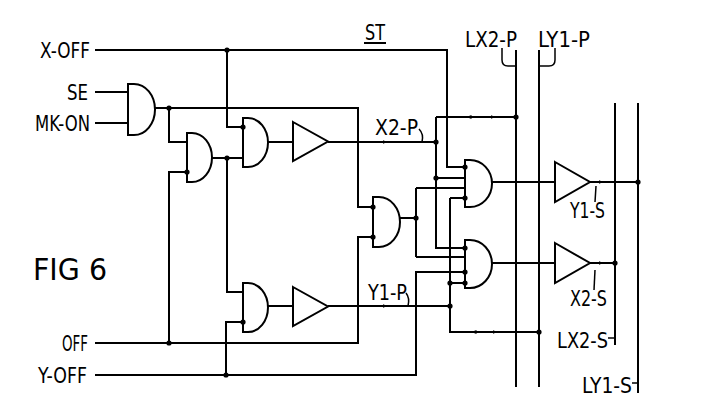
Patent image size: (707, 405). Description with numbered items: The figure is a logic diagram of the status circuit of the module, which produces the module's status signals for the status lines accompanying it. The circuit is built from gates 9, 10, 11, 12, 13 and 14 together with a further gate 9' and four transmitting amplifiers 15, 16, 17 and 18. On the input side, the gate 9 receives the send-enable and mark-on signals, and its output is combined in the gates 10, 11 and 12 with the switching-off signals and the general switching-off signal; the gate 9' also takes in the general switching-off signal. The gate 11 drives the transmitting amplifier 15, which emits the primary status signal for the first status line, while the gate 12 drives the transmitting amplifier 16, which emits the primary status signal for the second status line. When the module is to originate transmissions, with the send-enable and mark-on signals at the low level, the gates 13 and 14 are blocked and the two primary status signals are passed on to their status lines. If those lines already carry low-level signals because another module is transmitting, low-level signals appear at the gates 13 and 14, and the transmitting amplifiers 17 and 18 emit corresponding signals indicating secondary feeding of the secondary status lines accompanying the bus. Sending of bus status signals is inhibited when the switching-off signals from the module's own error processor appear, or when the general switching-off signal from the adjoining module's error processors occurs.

The gate 9 is at (150, 102).
The gate 10 is at (192, 183).
The gate 11 is at (257, 167).
The gate 12 is at (248, 283).
The gate 9' is at (369, 222).
The gate 13 is at (477, 162).
The gate 14 is at (481, 243).
The transmitting amplifier 15 is at (315, 131).
The transmitting amplifier 16 is at (318, 313).
The transmitting amplifier 17 is at (567, 169).
The transmitting amplifier 18 is at (571, 253).